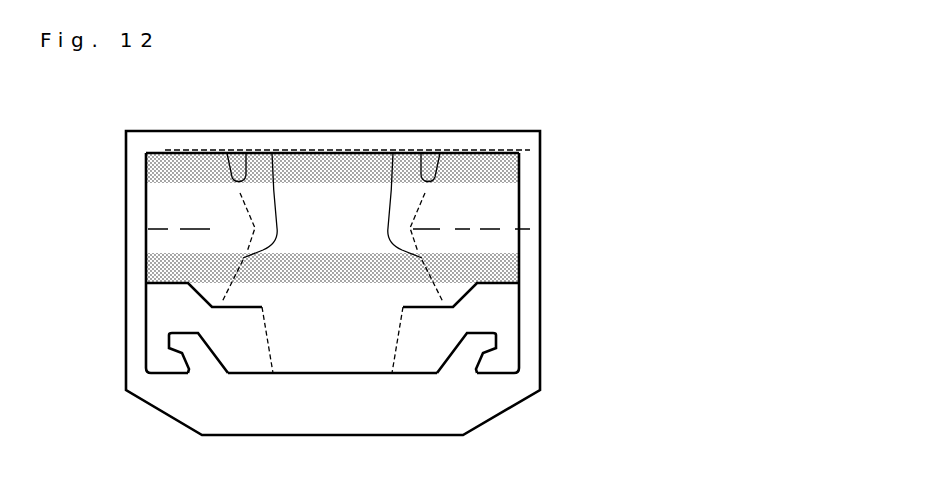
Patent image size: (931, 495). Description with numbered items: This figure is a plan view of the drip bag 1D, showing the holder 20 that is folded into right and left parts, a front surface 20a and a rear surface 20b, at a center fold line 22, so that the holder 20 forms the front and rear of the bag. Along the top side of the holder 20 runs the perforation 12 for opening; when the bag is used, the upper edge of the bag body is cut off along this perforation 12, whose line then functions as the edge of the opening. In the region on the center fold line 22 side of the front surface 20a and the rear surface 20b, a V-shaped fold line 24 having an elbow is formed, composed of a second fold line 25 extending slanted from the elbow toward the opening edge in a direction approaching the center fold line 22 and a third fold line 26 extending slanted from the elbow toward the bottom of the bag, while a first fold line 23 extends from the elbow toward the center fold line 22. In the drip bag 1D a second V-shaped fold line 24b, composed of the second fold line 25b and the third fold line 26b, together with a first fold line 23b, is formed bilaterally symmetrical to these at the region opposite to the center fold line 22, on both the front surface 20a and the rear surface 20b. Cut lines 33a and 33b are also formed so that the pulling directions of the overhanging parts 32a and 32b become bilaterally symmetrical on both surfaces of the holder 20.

The drip bag 1D is at (90, 123).
The perforation for opening 12 is at (135, 152).
The holder 20 is at (493, 172).
The front surface 20a is at (338, 166).
The rear surface 20b is at (332, 268).
The center fold line 22 is at (540, 172).
The first fold line 23 is at (510, 228).
The first fold line 23b is at (166, 231).
The V-shaped fold line 24 is at (448, 85).
The V-shaped fold line 24b is at (305, 85).
The second fold line 25 is at (422, 153).
The second fold line 25b is at (243, 152).
The third fold line 26 is at (392, 153).
The third fold line 26b is at (271, 153).
The overhanging part 32a is at (503, 320).
The overhanging part 32b is at (160, 322).
The cut line 33a is at (467, 293).
The cut line 33b is at (193, 290).